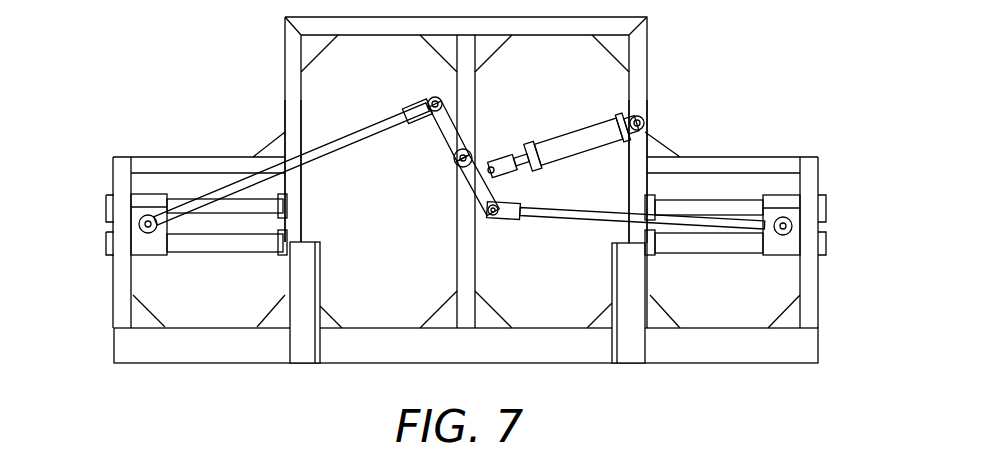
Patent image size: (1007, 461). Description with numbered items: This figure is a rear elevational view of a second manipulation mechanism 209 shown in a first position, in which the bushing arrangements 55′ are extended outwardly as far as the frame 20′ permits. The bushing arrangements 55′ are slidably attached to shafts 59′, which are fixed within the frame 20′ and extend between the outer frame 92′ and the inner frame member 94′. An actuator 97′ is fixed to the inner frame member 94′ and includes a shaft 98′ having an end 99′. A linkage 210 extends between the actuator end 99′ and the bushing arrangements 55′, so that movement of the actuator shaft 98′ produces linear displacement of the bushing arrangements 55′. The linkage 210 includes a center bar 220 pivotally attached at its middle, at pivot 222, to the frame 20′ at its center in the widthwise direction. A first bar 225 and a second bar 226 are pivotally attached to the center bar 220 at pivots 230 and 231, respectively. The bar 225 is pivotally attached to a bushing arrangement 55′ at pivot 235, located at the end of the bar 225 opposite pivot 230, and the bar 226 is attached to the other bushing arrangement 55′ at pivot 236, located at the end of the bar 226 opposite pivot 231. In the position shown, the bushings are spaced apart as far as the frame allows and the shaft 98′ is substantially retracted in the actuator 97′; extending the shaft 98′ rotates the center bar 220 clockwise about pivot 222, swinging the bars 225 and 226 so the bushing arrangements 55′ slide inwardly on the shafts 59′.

The frame 20′ is at (768, 366).
The manipulation mechanism 209 is at (687, 88).
The inner frame member 94′ is at (306, 218).
The outer frame 92′ is at (112, 290).
The shafts 59′ is at (243, 205).
The bushing arrangements 55′ is at (142, 194).
The pivot 235 is at (147, 231).
The pivot 236 is at (793, 237).
The first bar 225 is at (342, 137).
The center bar 220 is at (442, 143).
The pivot 230 is at (430, 98).
The pivot 222 is at (458, 164).
The linkage 210 is at (462, 187).
The pivot 231 is at (497, 222).
The first bar 226 is at (576, 225).
The actuator end 99′ is at (487, 162).
The actuator shaft 98′ is at (511, 158).
The actuator 97′ is at (562, 130).